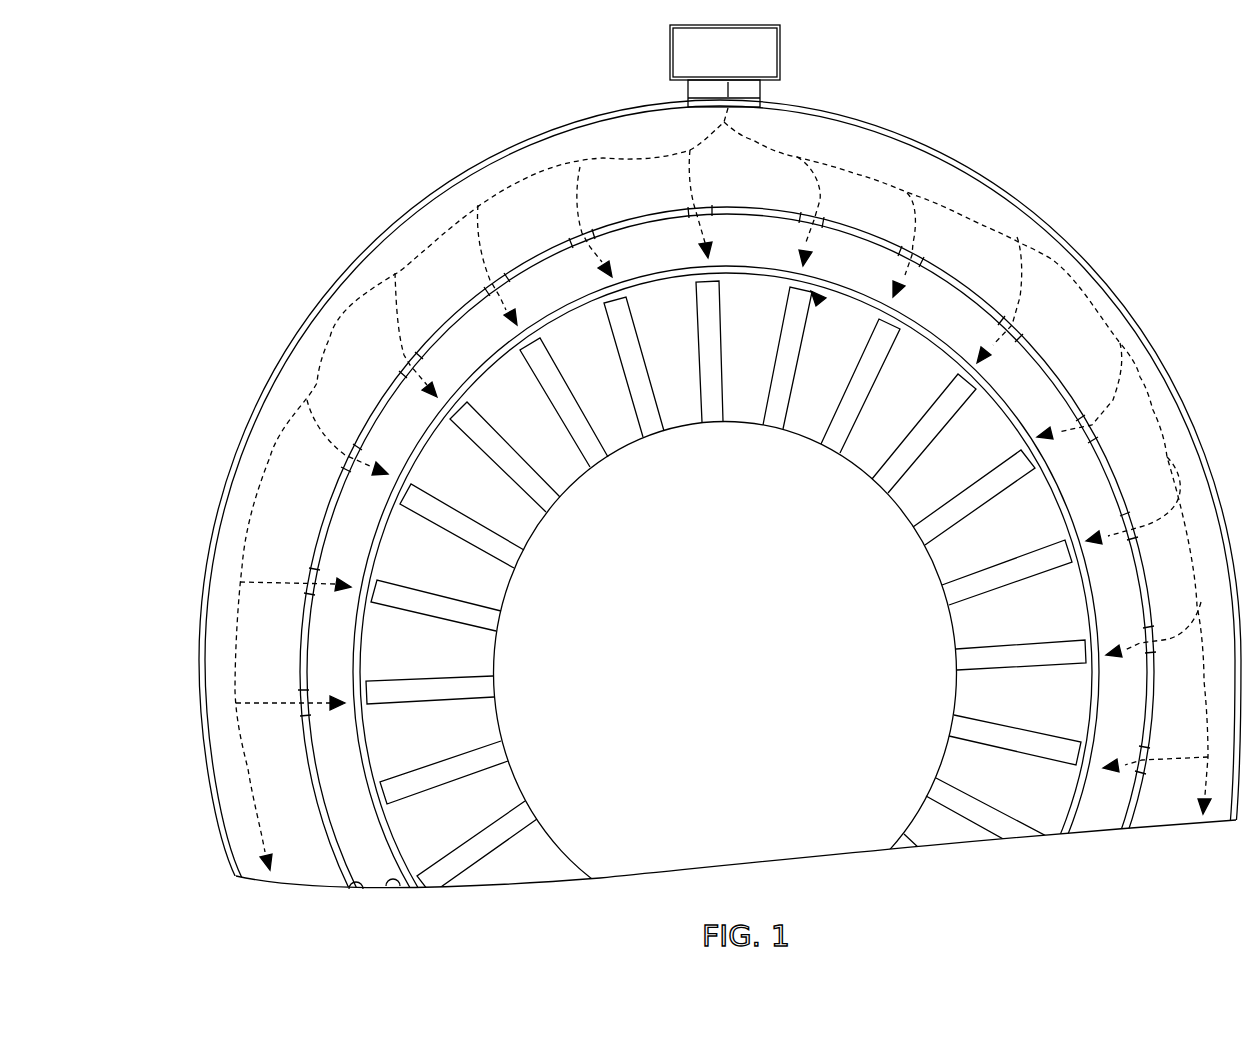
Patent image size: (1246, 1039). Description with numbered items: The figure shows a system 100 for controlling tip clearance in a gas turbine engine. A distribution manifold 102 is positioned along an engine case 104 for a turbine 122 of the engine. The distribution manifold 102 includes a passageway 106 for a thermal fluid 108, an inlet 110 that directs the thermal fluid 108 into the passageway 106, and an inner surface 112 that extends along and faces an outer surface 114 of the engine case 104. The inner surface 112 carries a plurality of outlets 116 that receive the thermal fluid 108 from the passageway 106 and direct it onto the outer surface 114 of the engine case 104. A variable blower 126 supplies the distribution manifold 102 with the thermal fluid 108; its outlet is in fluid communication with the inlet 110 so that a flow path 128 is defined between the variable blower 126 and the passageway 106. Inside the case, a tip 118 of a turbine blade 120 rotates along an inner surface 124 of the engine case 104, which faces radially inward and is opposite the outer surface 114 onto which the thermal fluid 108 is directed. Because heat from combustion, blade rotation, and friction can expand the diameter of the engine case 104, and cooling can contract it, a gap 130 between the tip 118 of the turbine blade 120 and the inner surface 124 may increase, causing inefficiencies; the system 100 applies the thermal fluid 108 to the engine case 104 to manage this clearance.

The system 100 is at (277, 208).
The distribution manifold 102 is at (720, 489).
The engine case 104 is at (727, 623).
The passageway 106 is at (268, 880).
The thermal fluid 108 is at (756, 142).
The inlet 110 is at (703, 106).
The inner surface 112 is at (357, 888).
The outer surface 114 is at (393, 884).
The outlets 116 is at (1098, 430).
The tip 118 is at (788, 293).
The turbine blade 120 is at (775, 428).
The turbine 122 is at (874, 851).
The inner surface 124 is at (1045, 834).
The variable blower 126 is at (669, 37).
The flow path 128 is at (762, 97).
The gap 130 is at (822, 304).